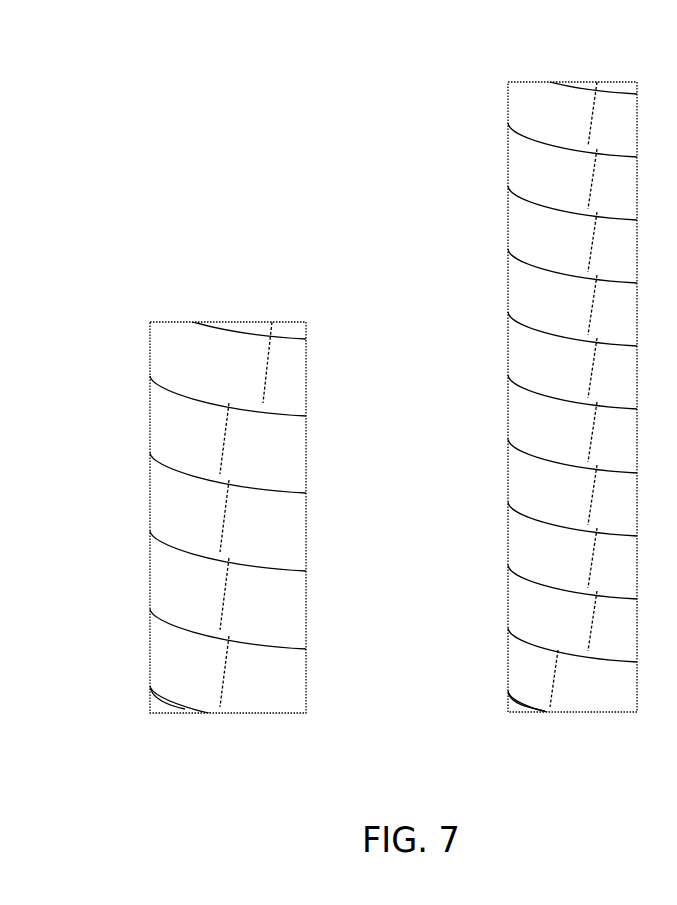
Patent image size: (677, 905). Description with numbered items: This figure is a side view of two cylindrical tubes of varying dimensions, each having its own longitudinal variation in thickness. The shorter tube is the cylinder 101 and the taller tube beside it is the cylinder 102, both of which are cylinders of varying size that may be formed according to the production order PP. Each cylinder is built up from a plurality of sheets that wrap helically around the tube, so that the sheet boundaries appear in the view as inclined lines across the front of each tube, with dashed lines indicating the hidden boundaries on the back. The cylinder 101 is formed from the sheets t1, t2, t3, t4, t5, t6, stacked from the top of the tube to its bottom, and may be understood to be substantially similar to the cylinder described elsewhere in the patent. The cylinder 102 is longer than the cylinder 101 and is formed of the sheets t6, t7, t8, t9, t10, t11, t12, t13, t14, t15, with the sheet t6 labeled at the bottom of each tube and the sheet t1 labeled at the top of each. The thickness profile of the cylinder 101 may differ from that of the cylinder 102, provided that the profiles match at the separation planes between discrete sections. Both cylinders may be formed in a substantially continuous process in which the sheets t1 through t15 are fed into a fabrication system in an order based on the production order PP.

The cylinder 101 is at (157, 285).
The cylinder 102 is at (468, 56).
The sheet t1 is at (219, 369).
The sheet t2 is at (197, 441).
The sheet t3 is at (197, 517).
The sheet t4 is at (197, 602).
The sheet t5 is at (197, 674).
The sheet t6 is at (157, 705).
The sheet t7 is at (544, 689).
The sheet t8 is at (559, 622).
The sheet t9 is at (559, 564).
The sheet t10 is at (576, 497).
The sheet t11 is at (582, 434).
The sheet t12 is at (576, 371).
The sheet t13 is at (575, 309).
The sheet t14 is at (575, 247).
The sheet t15 is at (575, 184).